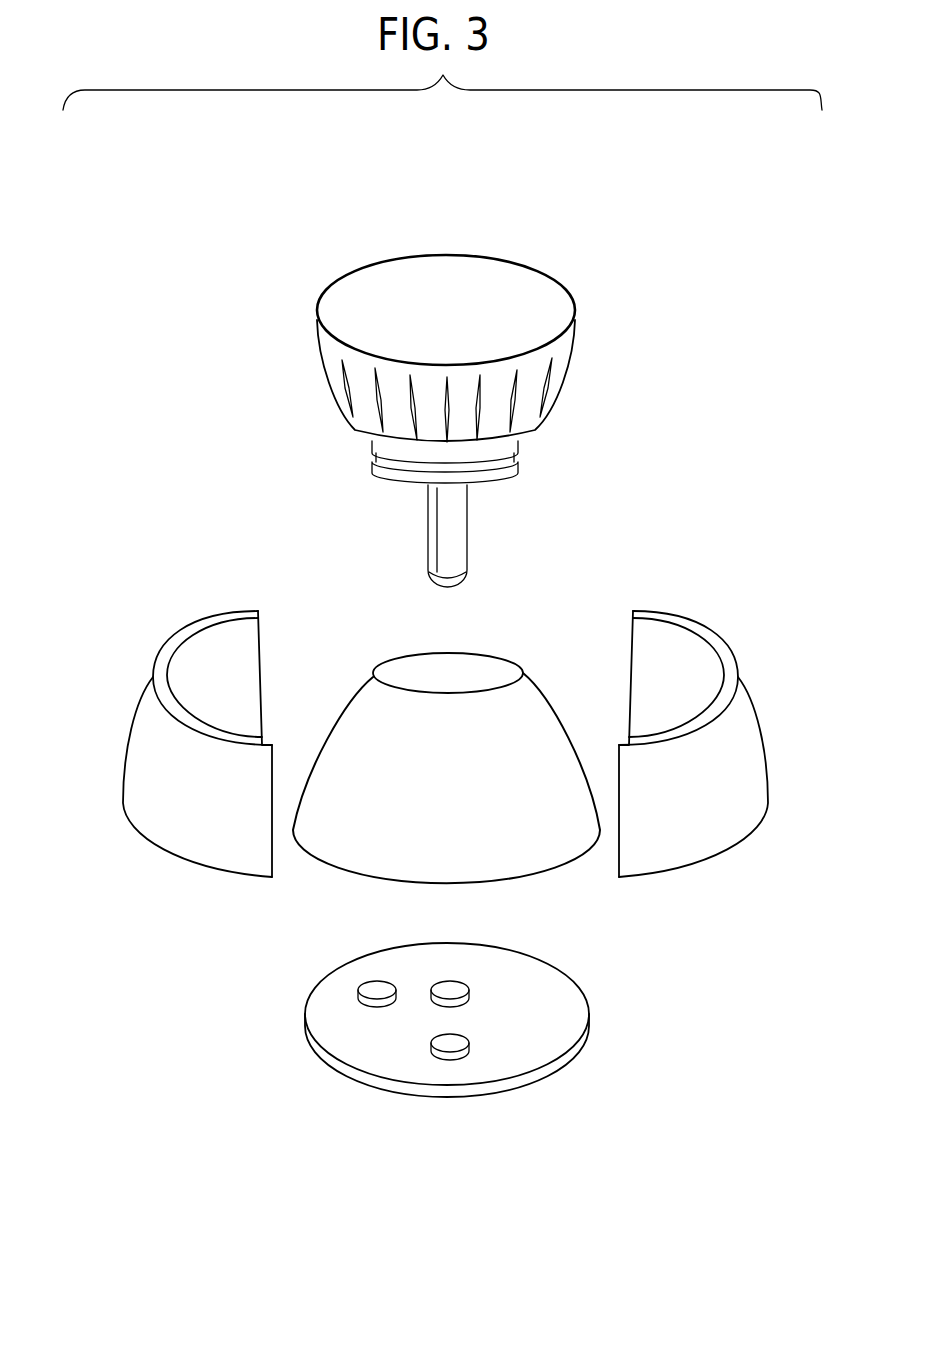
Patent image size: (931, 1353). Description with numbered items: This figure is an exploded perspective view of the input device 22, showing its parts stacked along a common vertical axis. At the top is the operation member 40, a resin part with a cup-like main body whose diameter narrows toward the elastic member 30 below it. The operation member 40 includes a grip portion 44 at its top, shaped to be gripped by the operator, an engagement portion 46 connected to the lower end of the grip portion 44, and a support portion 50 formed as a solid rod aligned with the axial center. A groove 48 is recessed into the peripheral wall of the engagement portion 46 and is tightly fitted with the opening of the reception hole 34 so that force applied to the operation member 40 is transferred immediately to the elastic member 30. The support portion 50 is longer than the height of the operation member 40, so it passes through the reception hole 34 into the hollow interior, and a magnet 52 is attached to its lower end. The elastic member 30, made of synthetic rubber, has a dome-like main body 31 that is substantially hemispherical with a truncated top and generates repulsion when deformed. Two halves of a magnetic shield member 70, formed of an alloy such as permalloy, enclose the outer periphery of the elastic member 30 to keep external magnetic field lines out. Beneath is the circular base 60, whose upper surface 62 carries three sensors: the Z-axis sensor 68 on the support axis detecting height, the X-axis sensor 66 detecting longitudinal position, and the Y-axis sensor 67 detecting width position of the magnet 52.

The input device 22 is at (231, 222).
The operation member 40 is at (590, 265).
The grip portion 44 is at (347, 305).
The engagement portion 46 is at (513, 450).
The groove 48 is at (378, 460).
The support portion 50 is at (453, 507).
The magnet 52 is at (440, 577).
The elastic member 30 is at (349, 614).
The reception hole 34 is at (510, 647).
The dome-like main body 31 is at (403, 837).
The magnetic shield member 70 is at (140, 640).
The base 60 is at (585, 1102).
The upper surface 62 is at (562, 1010).
The X-axis directional sensor 66 is at (450, 1043).
The Y-axis directional sensor 67 is at (377, 990).
The Z-axis directional sensor 68 is at (450, 988).